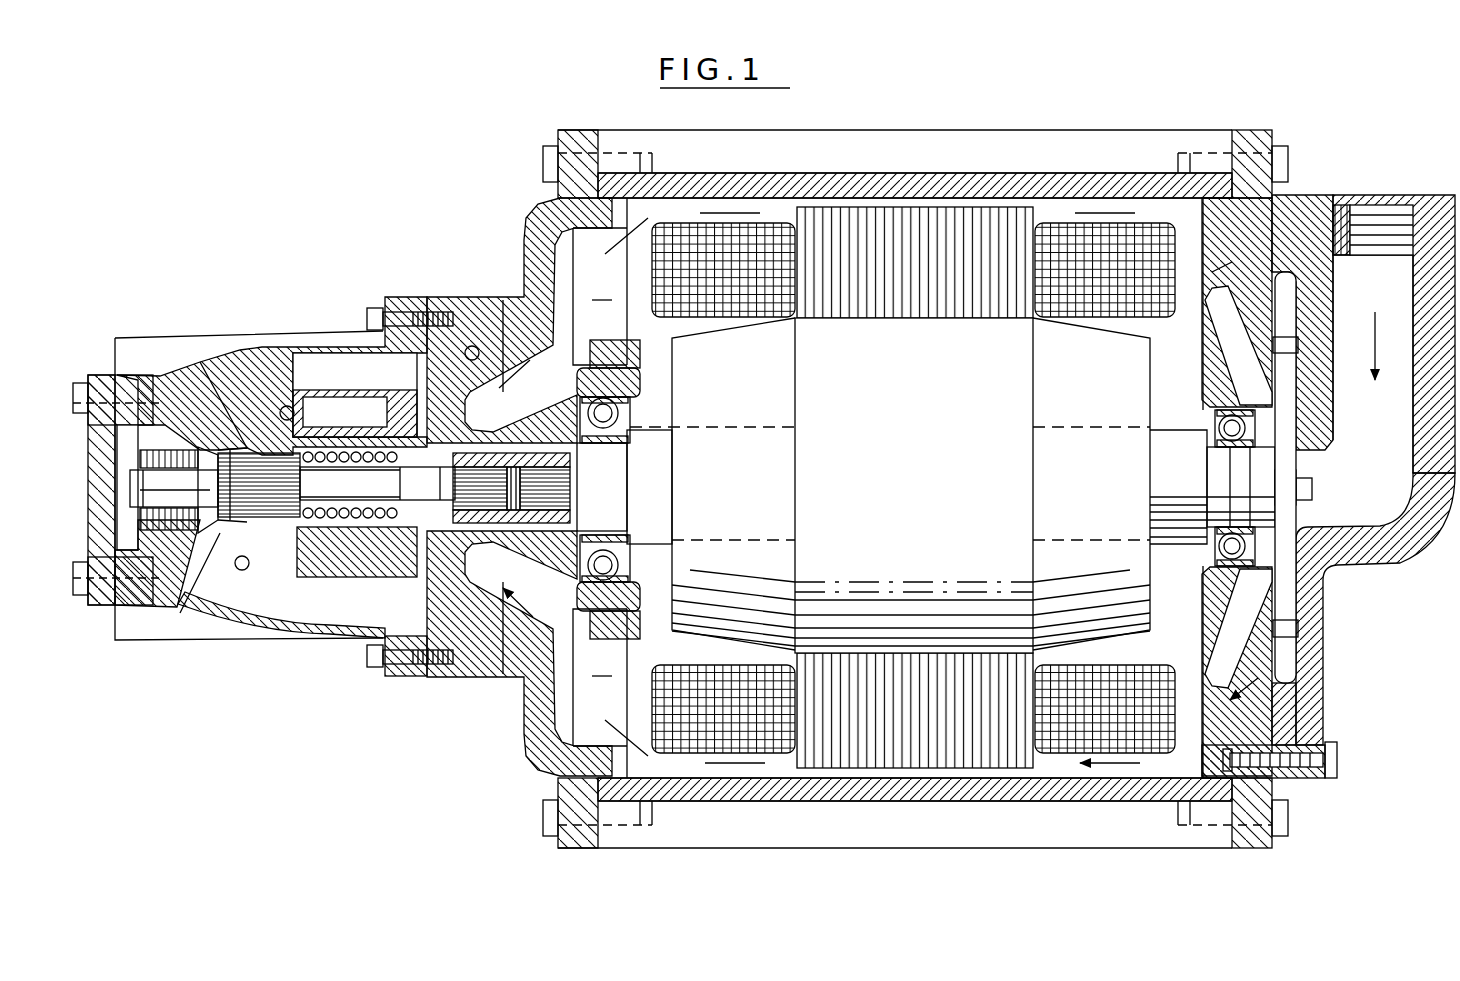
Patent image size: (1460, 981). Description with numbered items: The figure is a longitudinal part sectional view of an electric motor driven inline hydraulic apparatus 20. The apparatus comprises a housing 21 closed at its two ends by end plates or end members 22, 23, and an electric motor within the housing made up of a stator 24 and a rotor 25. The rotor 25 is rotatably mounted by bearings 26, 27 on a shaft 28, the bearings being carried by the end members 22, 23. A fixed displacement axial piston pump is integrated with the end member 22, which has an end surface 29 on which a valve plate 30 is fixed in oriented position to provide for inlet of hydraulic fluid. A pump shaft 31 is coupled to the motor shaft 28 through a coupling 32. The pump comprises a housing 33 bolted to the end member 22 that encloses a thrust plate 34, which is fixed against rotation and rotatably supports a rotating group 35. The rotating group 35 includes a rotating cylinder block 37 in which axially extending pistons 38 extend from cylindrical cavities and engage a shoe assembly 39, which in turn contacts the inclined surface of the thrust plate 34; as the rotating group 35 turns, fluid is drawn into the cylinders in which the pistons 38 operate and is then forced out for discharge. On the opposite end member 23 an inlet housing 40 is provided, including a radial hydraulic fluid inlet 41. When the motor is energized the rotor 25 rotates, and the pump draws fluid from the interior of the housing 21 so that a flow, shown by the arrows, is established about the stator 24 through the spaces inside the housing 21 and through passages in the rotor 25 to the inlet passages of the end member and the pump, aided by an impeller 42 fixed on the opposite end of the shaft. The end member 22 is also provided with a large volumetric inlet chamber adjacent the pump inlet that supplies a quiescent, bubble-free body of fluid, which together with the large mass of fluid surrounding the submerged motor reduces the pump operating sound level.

The electric motor driven inline hydraulic apparatus 20 is at (1068, 112).
The housing 21 is at (1104, 146).
The end plate or end member 22 is at (578, 140).
The end plate or end member 23 is at (1262, 136).
The stator 24 is at (950, 213).
The rotor 25 is at (935, 472).
The bearing 26 is at (603, 402).
The bearing 27 is at (1190, 422).
The shaft 28 is at (616, 491).
The end surface 29 is at (420, 666).
The valve plate 30 is at (412, 580).
The pump shaft 31 is at (373, 496).
The coupling 32 is at (511, 488).
The housing 33 is at (190, 392).
The thrust plate 34 is at (212, 556).
The rotating group 35 is at (364, 400).
The rotating cylinder block 37 is at (345, 578).
The pistons 38 is at (355, 413).
The shoe assembly 39 is at (240, 572).
The inlet housing 40 is at (1300, 216).
The radial hydraulic fluid inlet 41 is at (1386, 304).
The impeller 42 is at (1282, 528).